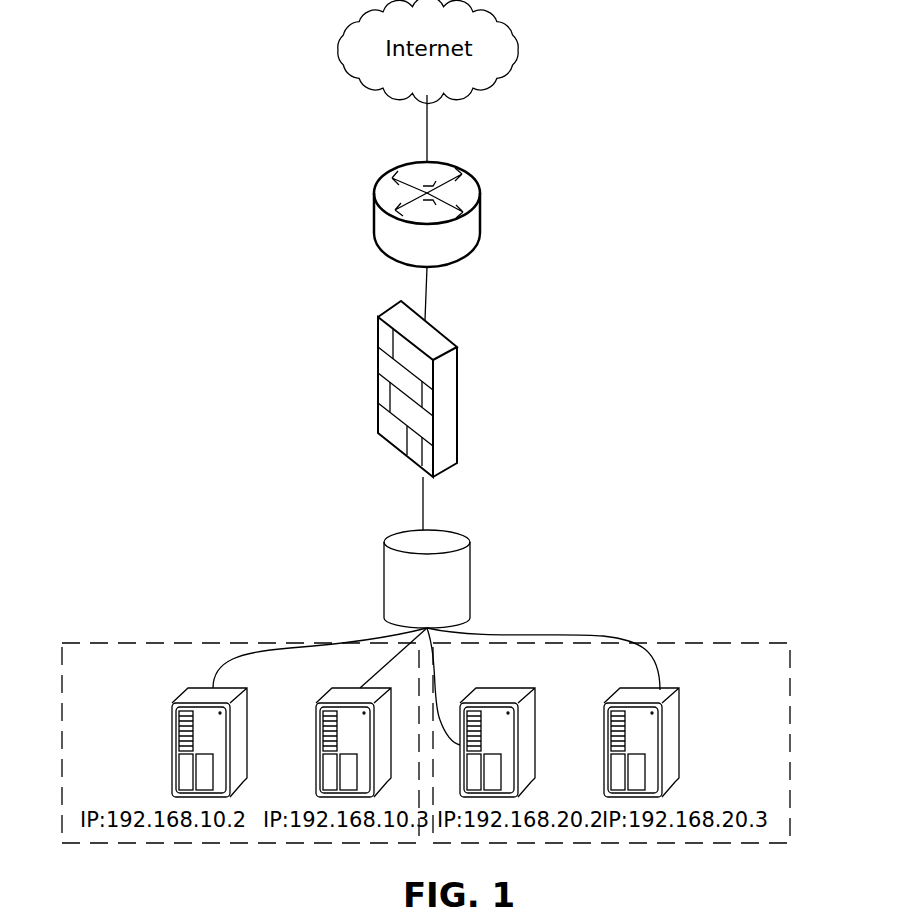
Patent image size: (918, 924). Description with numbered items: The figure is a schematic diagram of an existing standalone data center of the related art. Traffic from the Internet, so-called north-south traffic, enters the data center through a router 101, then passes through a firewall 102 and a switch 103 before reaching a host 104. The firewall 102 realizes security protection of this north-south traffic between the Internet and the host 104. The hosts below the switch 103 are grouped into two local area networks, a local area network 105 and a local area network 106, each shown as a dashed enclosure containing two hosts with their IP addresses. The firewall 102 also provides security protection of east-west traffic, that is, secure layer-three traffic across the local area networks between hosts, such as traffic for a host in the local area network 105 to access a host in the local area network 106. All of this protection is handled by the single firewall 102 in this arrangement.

The router 101 is at (467, 193).
The firewall 102 is at (440, 352).
The switch 103 is at (440, 543).
The host 104 is at (660, 708).
The local area network 105 is at (87, 657).
The local area network 106 is at (767, 720).